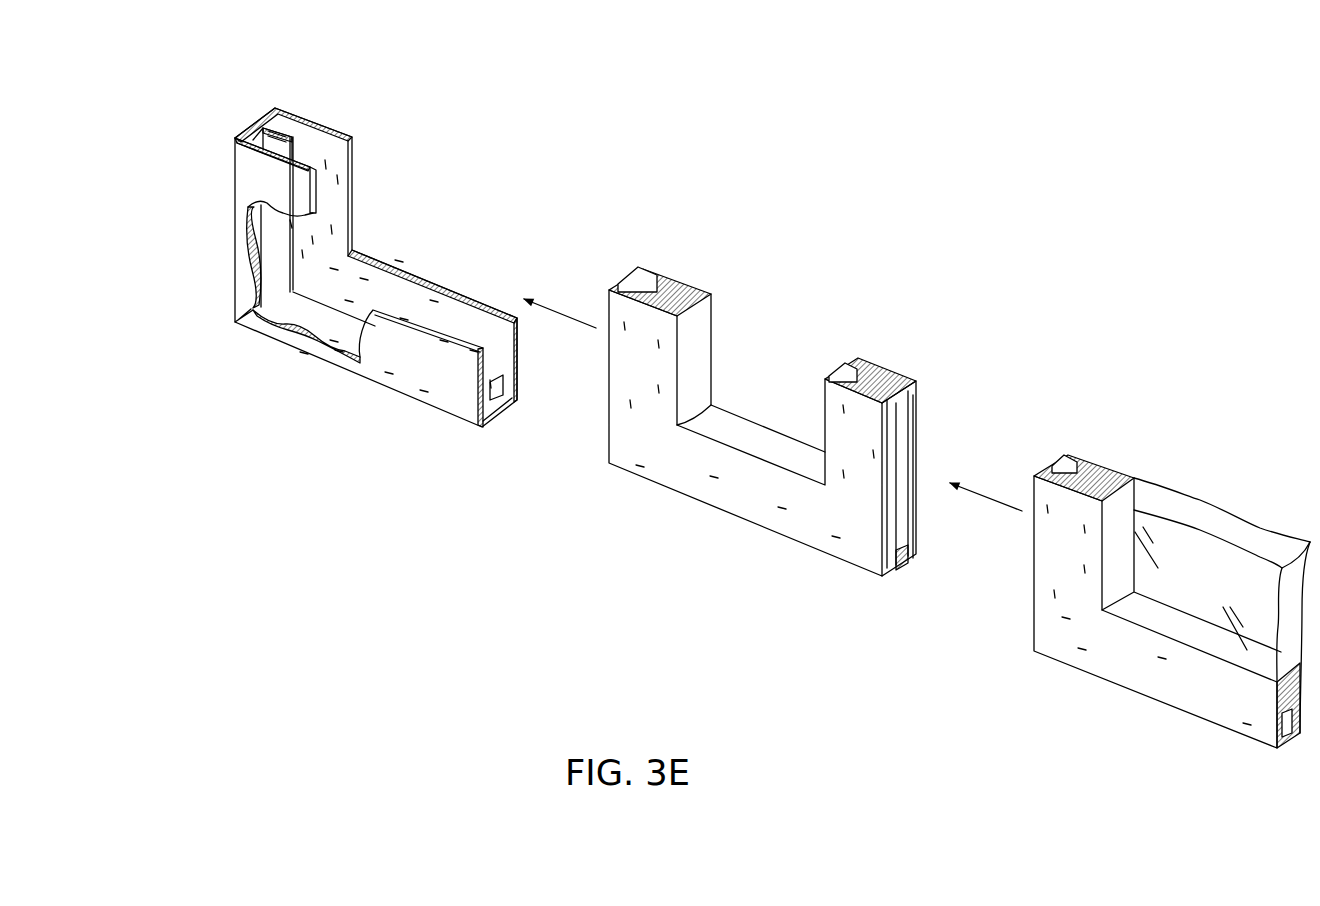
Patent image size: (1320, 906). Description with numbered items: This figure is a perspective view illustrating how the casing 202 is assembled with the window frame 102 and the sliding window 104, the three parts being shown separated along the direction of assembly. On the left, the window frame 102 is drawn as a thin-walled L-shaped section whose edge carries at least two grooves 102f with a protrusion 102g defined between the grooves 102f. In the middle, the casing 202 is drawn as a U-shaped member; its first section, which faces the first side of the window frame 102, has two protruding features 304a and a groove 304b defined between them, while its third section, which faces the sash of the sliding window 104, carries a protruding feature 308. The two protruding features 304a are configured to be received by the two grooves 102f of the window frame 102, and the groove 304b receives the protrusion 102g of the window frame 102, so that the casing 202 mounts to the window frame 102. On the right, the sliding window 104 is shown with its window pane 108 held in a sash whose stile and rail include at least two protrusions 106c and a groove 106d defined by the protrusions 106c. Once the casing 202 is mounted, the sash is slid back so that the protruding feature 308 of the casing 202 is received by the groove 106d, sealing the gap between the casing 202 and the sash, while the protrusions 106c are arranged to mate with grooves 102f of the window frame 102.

The window frame 102 is at (476, 142).
The grooves 102f is at (273, 108).
The protrusion 102g is at (289, 132).
The casing 202 is at (797, 286).
The protruding features 304a is at (618, 285).
The groove 304b is at (656, 282).
The protruding feature 308 is at (859, 538).
The sliding window 104 is at (1203, 412).
The protrusions 106c is at (1046, 464).
The groove 106d is at (1073, 460).
The window pane 108 is at (1219, 589).